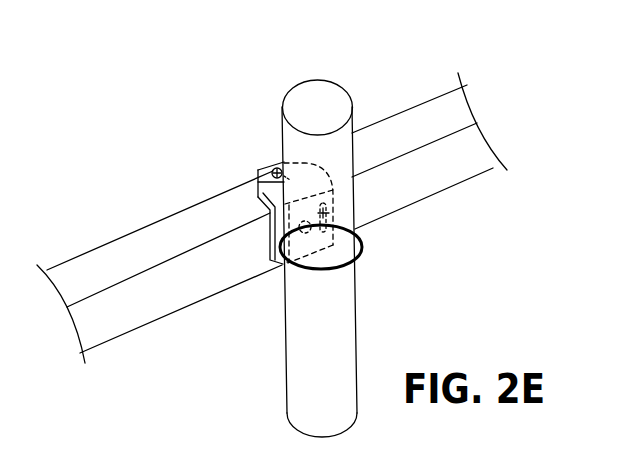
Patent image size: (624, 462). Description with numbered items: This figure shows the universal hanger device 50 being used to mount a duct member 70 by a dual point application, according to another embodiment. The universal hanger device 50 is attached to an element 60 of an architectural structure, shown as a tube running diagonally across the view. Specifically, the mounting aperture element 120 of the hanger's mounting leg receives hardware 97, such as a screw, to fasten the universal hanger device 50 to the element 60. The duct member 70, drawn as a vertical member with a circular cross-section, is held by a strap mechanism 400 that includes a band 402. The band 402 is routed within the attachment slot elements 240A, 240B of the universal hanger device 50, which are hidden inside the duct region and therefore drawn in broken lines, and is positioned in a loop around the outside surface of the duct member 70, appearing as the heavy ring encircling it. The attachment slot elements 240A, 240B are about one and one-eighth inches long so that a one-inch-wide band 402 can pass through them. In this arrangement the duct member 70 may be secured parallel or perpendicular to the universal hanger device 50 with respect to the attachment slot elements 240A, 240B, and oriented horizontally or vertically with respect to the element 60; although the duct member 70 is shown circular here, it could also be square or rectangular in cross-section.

The universal hanger device 50 is at (258, 180).
The element 60 is at (463, 157).
The duct member 70 is at (347, 407).
The hardware 97 is at (278, 168).
The mounting aperture element 120 is at (273, 172).
The attachment slot element 240A is at (287, 263).
The attachment slot element 240B is at (327, 212).
The strap mechanism 400 is at (386, 275).
The band 402 is at (361, 250).